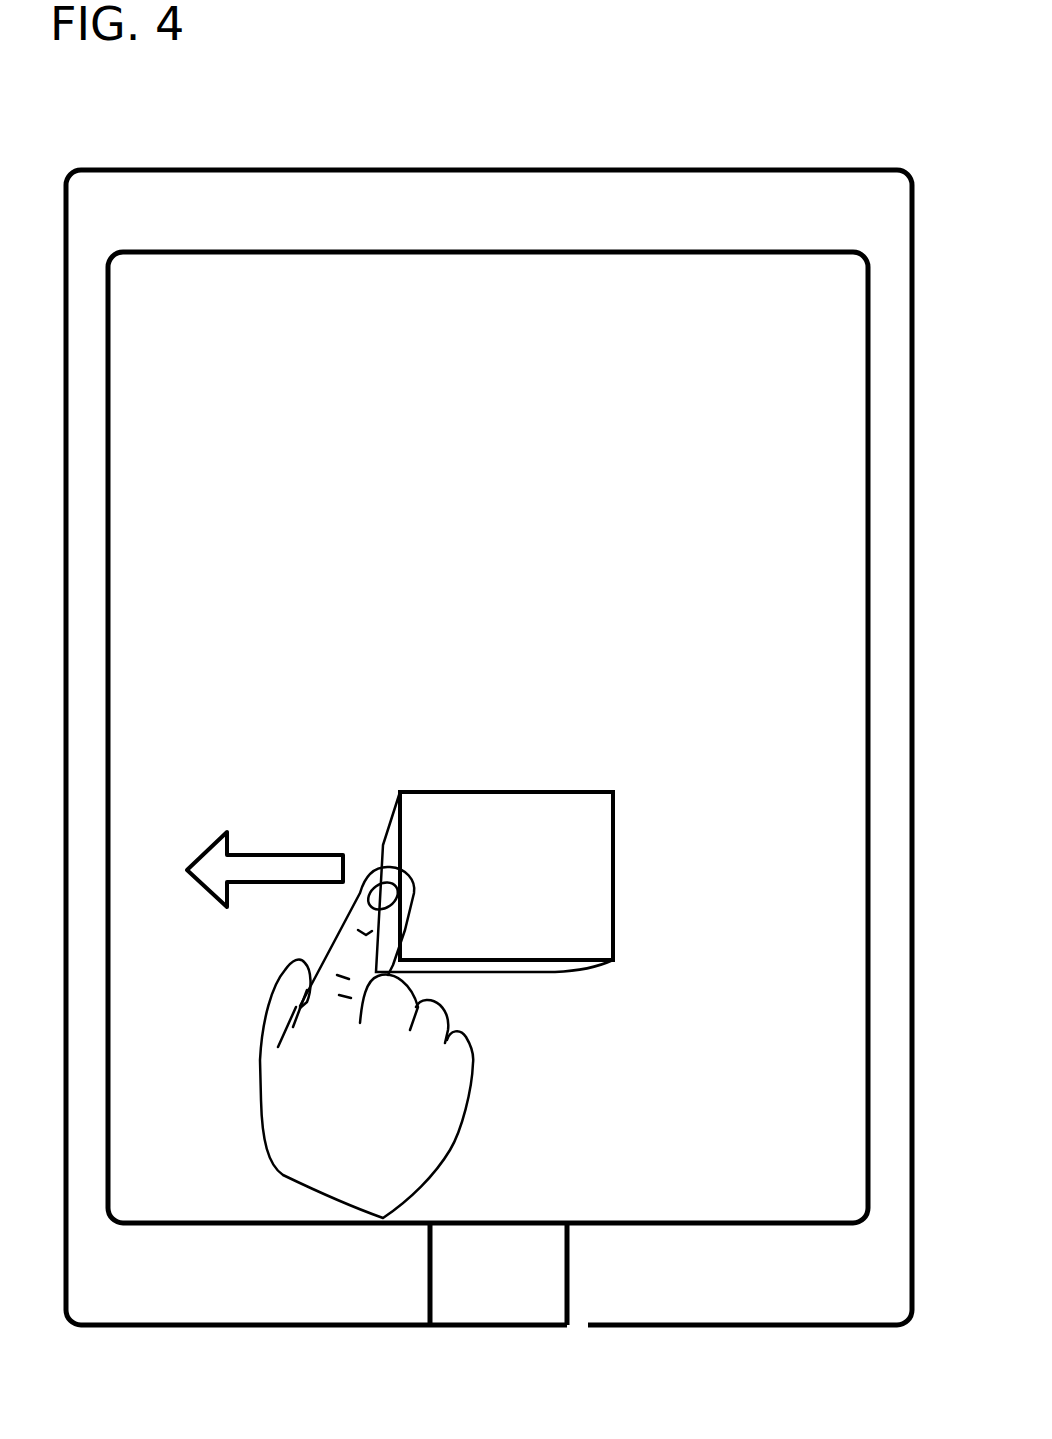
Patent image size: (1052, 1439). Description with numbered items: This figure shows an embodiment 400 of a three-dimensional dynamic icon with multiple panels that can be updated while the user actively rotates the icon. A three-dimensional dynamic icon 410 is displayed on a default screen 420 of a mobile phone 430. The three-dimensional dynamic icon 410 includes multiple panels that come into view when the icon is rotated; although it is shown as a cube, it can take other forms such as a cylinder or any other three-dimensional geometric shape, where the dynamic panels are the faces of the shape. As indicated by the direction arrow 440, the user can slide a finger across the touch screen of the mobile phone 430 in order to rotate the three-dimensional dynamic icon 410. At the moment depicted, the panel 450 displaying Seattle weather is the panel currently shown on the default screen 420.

The computing device 400 is at (830, 96).
The mobile phone 430 is at (512, 170).
The default screen 420 is at (781, 329).
The three-dimensional dynamic icon 410 is at (533, 787).
The panel 450 is at (587, 944).
The direction arrow 440 is at (263, 855).